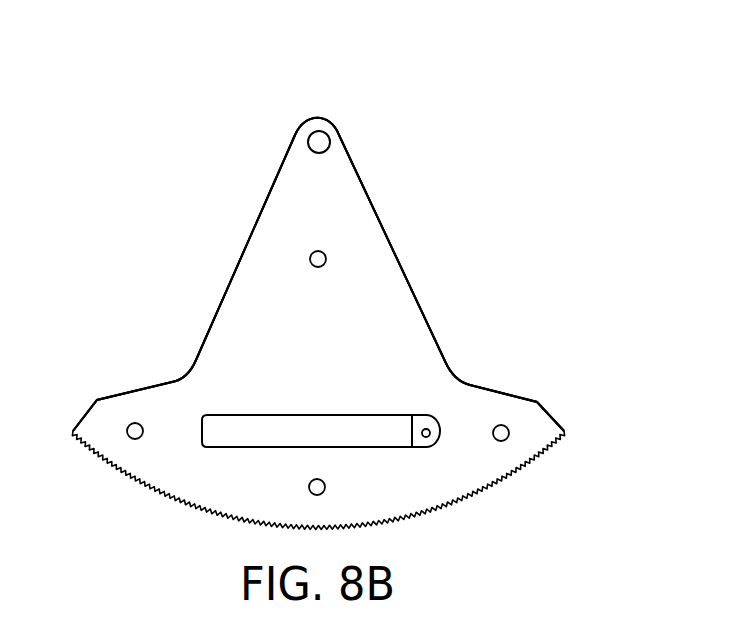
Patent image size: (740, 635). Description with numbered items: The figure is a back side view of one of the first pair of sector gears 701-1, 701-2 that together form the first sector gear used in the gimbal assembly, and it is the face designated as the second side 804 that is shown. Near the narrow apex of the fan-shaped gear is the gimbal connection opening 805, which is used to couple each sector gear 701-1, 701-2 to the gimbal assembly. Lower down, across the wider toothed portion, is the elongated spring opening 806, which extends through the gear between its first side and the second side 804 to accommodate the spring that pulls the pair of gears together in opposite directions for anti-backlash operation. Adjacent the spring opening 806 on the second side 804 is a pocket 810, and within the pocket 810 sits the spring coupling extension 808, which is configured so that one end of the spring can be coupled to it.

The first sector gear of the first pair 701-1 is at (396, 257).
The second sector gear of the first pair 701-2 is at (328, 274).
The second side 804 is at (352, 327).
The gimbal connection opening 805 is at (318, 133).
The spring opening 806 is at (247, 425).
The spring coupling extension 808 is at (428, 438).
The pocket 810 is at (424, 428).